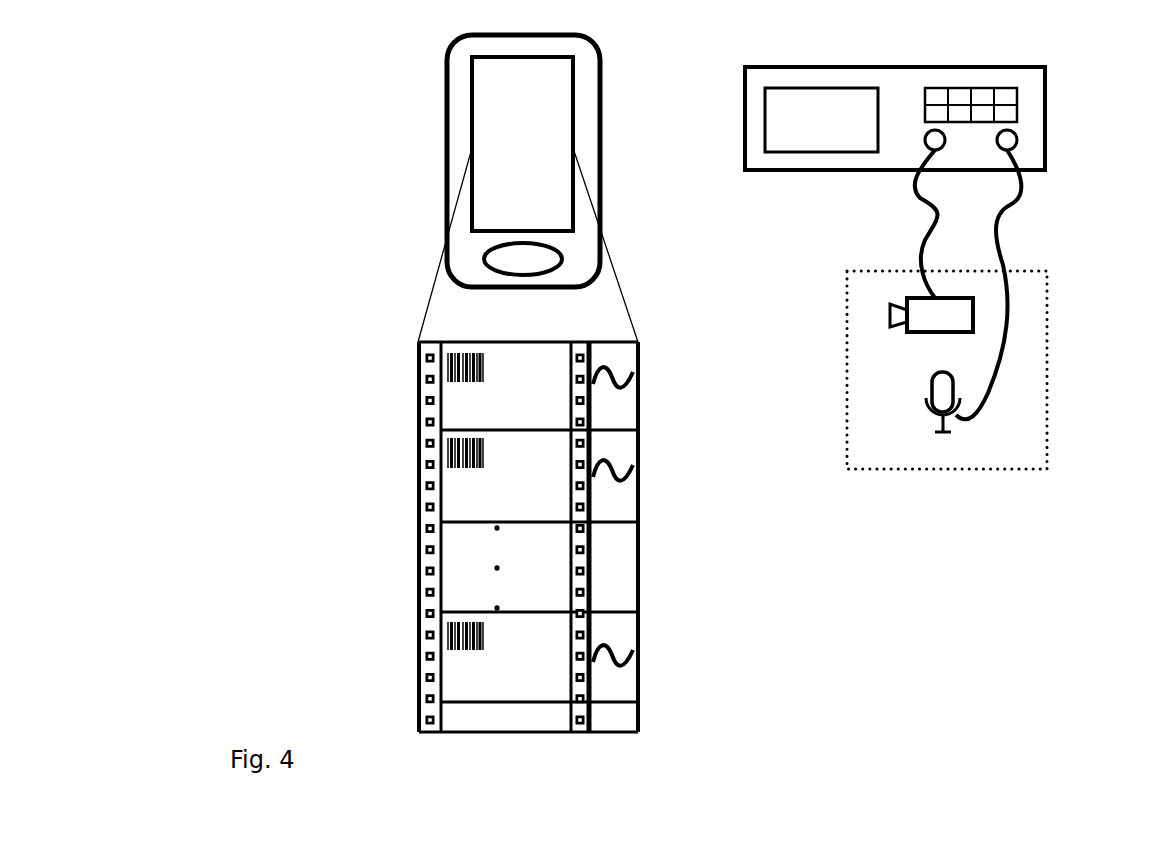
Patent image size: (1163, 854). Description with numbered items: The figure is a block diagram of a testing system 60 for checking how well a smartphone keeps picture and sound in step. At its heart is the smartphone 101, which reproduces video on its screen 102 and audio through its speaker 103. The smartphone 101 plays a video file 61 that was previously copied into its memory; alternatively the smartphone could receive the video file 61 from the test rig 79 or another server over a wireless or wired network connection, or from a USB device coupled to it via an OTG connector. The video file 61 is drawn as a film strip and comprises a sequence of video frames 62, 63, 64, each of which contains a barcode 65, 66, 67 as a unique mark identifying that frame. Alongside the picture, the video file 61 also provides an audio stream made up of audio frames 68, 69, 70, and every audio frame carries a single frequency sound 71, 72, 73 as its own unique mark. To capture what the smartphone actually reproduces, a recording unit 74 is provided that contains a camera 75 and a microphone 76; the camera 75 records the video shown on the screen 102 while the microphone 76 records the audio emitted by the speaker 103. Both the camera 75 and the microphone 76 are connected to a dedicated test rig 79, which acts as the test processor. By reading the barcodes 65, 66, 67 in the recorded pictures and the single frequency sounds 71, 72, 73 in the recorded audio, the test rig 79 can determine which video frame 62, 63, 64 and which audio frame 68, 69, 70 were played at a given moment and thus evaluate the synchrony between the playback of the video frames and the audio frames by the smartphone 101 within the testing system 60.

The testing system 60 is at (1019, 641).
The video file 61 is at (312, 343).
The video frame 62 is at (450, 412).
The video frame 63 is at (462, 507).
The video frame 64 is at (458, 685).
The barcode 65 is at (448, 369).
The barcode 66 is at (450, 463).
The barcode 67 is at (448, 640).
The audio frame 68 is at (633, 355).
The audio frame 69 is at (633, 512).
The audio frame 70 is at (632, 690).
The single frequency sound 71 is at (633, 400).
The single frequency sound 72 is at (633, 470).
The single frequency sound 73 is at (640, 640).
The recording unit 74 is at (1047, 325).
The camera 75 is at (905, 298).
The microphone 76 is at (928, 396).
The test rig 79 is at (1047, 90).
The smartphone 101 is at (447, 90).
The screen 102 is at (573, 90).
The speaker 103 is at (560, 270).